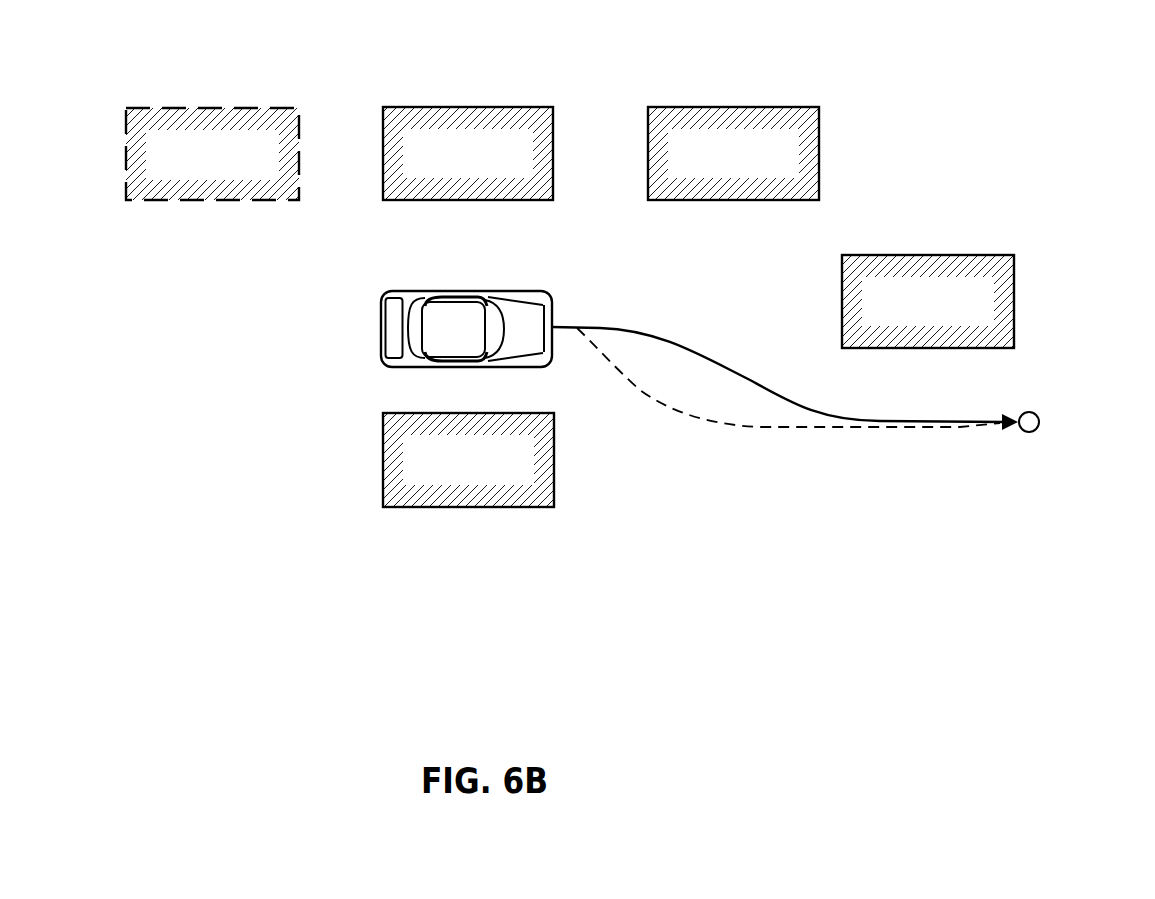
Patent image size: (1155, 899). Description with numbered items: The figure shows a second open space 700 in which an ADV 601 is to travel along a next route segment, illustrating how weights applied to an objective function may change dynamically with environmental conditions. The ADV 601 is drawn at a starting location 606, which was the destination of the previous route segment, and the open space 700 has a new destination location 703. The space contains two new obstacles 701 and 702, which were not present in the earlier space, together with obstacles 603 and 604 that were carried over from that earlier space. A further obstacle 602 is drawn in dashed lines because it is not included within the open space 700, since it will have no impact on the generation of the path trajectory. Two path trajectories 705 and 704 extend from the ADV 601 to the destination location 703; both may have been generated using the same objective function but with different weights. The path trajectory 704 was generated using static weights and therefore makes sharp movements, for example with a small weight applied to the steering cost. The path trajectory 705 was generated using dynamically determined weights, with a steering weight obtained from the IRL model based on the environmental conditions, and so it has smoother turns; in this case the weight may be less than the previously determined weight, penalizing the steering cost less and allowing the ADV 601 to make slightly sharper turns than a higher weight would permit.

The ADV 601 is at (470, 340).
The obstacle 602 is at (130, 108).
The obstacle 603 is at (386, 107).
The obstacle 604 is at (383, 460).
The starting location 606 is at (432, 278).
The open space 700 is at (942, 59).
The obstacle 701 is at (651, 107).
The obstacle 702 is at (845, 255).
The destination location 703 is at (1039, 422).
The path trajectory 704 is at (733, 424).
The path trajectory 705 is at (673, 345).